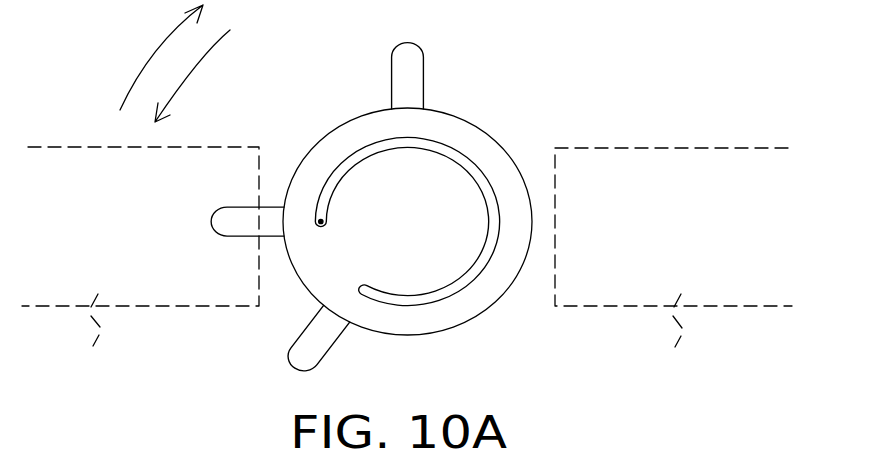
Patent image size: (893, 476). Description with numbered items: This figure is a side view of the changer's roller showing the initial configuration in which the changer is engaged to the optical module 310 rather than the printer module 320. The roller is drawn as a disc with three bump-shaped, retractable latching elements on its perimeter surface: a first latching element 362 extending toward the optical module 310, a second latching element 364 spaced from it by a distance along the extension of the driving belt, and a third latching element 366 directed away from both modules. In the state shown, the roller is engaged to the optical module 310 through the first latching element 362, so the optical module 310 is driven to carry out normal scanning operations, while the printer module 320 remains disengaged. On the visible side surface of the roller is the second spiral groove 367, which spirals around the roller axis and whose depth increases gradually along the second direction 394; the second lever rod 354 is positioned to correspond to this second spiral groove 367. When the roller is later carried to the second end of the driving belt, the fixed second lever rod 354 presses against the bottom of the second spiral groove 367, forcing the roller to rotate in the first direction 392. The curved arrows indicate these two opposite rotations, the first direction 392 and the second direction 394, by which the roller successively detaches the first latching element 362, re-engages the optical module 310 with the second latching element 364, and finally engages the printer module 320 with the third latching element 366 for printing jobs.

The optical module 310 is at (140, 264).
The printer module 320 is at (673, 266).
The second lever rod 354 is at (318, 221).
The first latching element 362 is at (238, 232).
The second latching element 364 is at (312, 358).
The third latching element 366 is at (415, 64).
The second spiral groove 367 is at (472, 160).
The first direction 392 is at (152, 54).
The second direction 394 is at (200, 58).